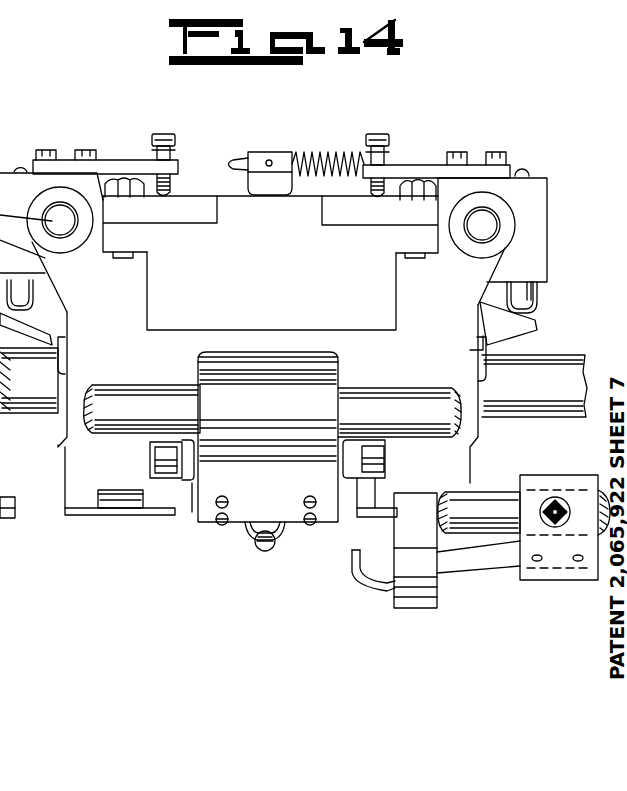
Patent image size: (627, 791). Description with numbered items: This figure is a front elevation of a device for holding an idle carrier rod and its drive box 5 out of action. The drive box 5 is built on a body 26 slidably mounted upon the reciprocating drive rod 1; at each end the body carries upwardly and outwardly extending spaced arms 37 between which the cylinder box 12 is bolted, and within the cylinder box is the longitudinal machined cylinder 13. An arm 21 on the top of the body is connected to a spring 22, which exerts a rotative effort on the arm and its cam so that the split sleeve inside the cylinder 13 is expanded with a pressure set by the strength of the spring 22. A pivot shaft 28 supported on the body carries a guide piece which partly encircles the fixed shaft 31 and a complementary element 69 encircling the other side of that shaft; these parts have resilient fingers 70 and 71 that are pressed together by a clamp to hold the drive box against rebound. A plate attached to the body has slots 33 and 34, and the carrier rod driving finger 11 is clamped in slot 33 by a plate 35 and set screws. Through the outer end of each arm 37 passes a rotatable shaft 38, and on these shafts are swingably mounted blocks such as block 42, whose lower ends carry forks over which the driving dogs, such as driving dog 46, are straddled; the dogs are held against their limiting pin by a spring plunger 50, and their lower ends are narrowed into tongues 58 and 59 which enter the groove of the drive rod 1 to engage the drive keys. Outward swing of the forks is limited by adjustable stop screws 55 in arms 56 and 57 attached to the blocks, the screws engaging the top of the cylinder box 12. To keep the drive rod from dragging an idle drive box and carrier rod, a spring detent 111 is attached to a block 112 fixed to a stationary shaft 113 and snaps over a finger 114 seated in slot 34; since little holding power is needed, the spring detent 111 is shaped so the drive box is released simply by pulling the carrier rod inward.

The drive rod 1 is at (562, 360).
The drive box 5 is at (210, 193).
The carrier rod driving finger 11 is at (128, 503).
The cylinder box 12 is at (271, 286).
The cylinder 13 is at (14, 488).
The arm 21 is at (241, 155).
The spring 22 is at (336, 152).
The body 26 is at (78, 450).
The pivot shaft 28 is at (156, 454).
The fixed shaft 31 is at (136, 388).
The slot 33 is at (100, 510).
The slot 34 is at (420, 497).
The plate 35 is at (100, 507).
The arm 37 is at (490, 263).
The rotatable shaft 38 is at (486, 222).
The block 42 is at (540, 217).
The driving dog 46 is at (530, 322).
The spring plunger 50 is at (537, 291).
The adjustable stop screw 55 is at (165, 134).
The arm 56 is at (124, 162).
The arm 57 is at (402, 165).
The tongue 58 is at (52, 341).
The tongue 59 is at (490, 344).
The complementary element 69 is at (192, 512).
The resilient finger 70 is at (335, 352).
The resilient finger 71 is at (333, 368).
The spring detent 111 is at (465, 568).
The block 112 is at (542, 481).
The stationary shaft 113 is at (488, 497).
The finger 114 is at (395, 601).